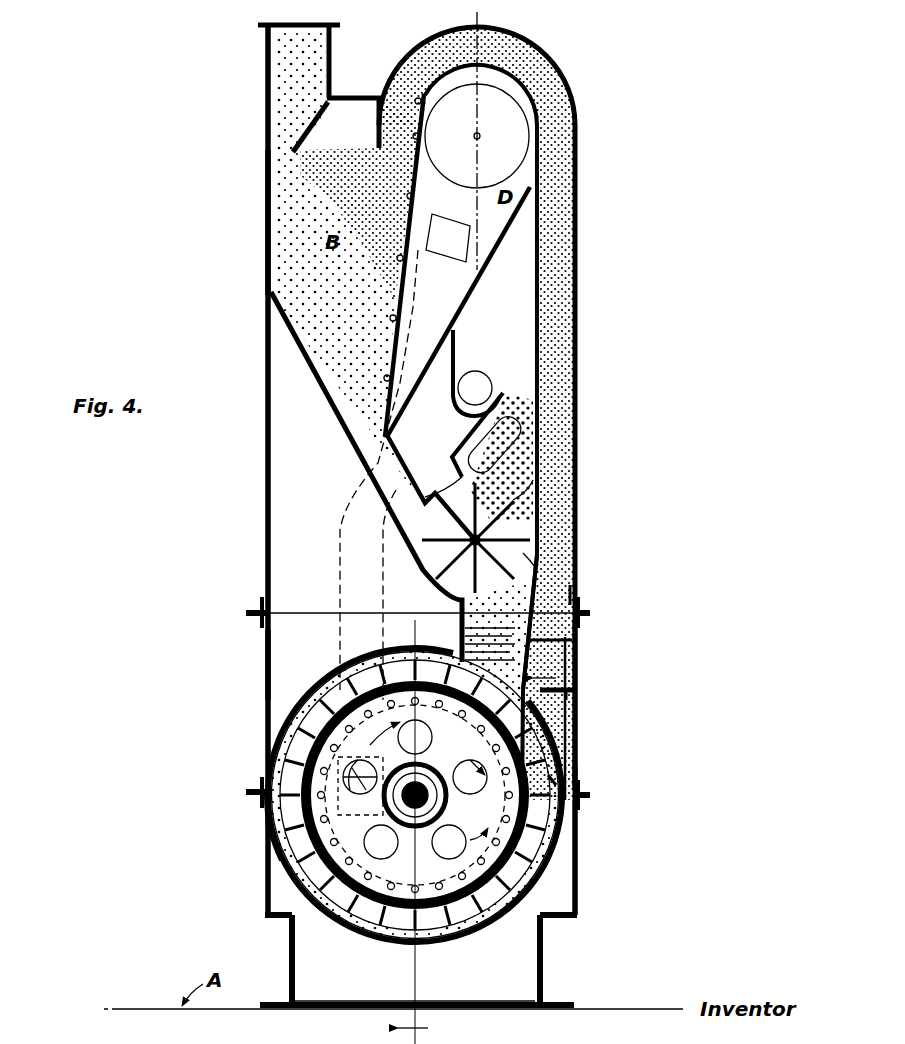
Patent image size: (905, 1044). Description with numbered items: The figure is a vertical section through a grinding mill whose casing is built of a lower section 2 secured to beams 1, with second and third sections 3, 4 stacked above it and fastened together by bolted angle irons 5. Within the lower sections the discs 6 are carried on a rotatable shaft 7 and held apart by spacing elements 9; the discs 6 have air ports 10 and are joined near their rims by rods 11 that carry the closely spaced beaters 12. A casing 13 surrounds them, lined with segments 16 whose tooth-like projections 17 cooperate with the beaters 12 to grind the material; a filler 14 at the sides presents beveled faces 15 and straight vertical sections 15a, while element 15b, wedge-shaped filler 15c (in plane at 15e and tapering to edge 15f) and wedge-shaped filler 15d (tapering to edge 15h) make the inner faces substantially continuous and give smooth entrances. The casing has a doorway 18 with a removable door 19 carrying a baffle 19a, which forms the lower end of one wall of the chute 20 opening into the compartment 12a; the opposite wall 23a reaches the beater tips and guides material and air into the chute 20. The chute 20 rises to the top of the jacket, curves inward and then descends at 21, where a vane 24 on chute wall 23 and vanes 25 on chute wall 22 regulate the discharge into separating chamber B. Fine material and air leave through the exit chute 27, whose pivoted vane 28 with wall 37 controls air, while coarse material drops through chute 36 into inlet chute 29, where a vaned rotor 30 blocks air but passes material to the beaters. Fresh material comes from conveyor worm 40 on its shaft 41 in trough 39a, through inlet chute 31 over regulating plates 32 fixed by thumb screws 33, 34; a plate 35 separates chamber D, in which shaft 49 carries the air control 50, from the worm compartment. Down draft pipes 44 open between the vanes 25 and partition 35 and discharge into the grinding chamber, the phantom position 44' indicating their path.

The beams 1 is at (546, 960).
The lower section 2 is at (573, 870).
The second section 3 is at (456, 20).
The third section 4 is at (266, 472).
The bolted angle irons 5 is at (252, 610).
The discs 6 is at (366, 930).
The rotatable shaft 7 is at (438, 798).
The spacing elements 9 is at (422, 780).
The air ports 10 is at (434, 737).
The rods 11 is at (405, 735).
The beaters 12 is at (293, 744).
The compartment 12a is at (556, 783).
The casing 13 is at (323, 674).
The filler 14 is at (280, 833).
The beveled inner peripheral faces 15 is at (280, 863).
The straight vertical sections 15a is at (268, 821).
The filler element 15b is at (523, 673).
The wedge-shaped filler 15c is at (556, 681).
The wedge-shaped filler 15d is at (540, 633).
The plane location 15e is at (573, 694).
The edge 15f is at (575, 596).
The edge 15h is at (462, 606).
The segments 16 is at (414, 664).
The tooth-like projections 17 is at (374, 668).
The doorway 18 is at (568, 753).
The door 19 is at (577, 734).
The baffle 19a is at (577, 774).
The chute 20 is at (595, 516).
The downward extension of chute 21 is at (415, 102).
The chute wall 22 is at (420, 106).
The chute wall 23 is at (378, 96).
The chute wall 23a is at (576, 691).
The vane 24 is at (377, 129).
The vanes 25 is at (408, 174).
The exit chute 27 is at (299, 61).
The pivoted vane 28 is at (312, 145).
The inlet chute 29 is at (491, 625).
The rotor 30 is at (522, 548).
The inlet chute 31 is at (528, 468).
The regulating plates 32 is at (505, 401).
The thumb screw 33 is at (566, 441).
The thumb screw 34 is at (490, 447).
The plate 35 is at (467, 317).
The inlet chute 36 is at (390, 478).
The wall 37 is at (266, 186).
The trough 39a is at (462, 416).
The conveyor worm 40 is at (488, 391).
The worm shaft 41 is at (477, 381).
The down draft pipes 44 is at (448, 238).
The bucket path 44' is at (355, 475).
The shaft 49 is at (483, 135).
The air control 50 is at (505, 107).